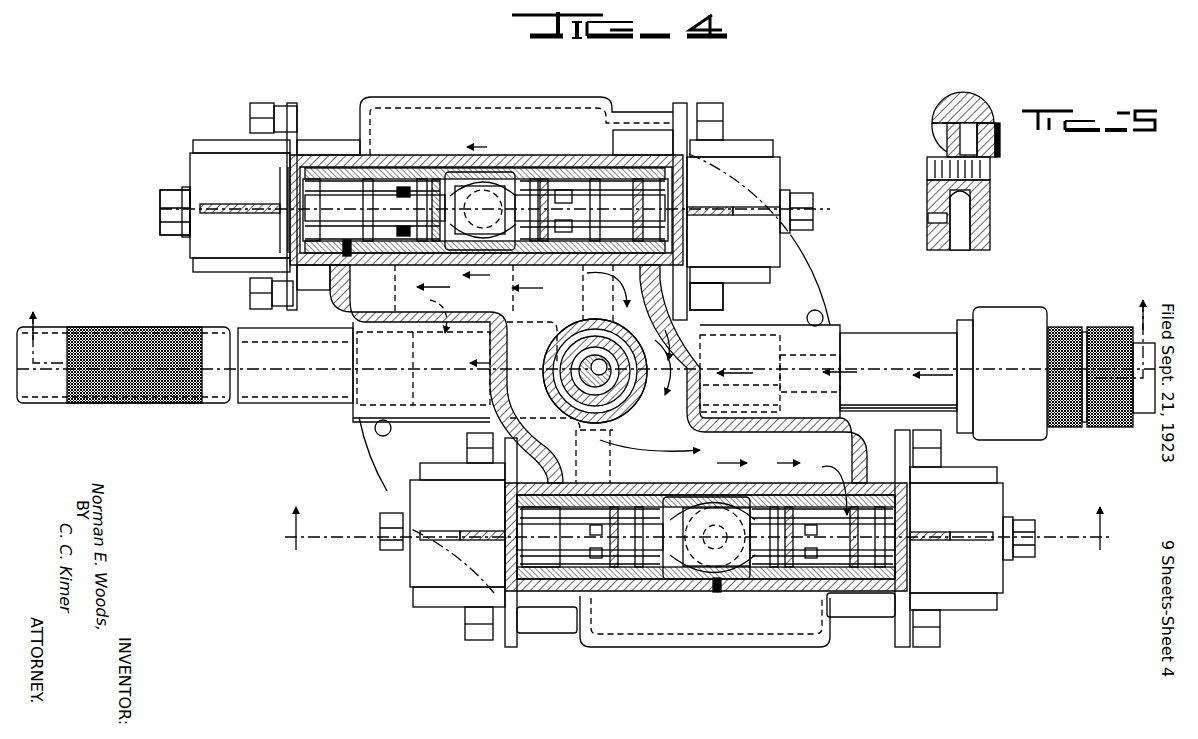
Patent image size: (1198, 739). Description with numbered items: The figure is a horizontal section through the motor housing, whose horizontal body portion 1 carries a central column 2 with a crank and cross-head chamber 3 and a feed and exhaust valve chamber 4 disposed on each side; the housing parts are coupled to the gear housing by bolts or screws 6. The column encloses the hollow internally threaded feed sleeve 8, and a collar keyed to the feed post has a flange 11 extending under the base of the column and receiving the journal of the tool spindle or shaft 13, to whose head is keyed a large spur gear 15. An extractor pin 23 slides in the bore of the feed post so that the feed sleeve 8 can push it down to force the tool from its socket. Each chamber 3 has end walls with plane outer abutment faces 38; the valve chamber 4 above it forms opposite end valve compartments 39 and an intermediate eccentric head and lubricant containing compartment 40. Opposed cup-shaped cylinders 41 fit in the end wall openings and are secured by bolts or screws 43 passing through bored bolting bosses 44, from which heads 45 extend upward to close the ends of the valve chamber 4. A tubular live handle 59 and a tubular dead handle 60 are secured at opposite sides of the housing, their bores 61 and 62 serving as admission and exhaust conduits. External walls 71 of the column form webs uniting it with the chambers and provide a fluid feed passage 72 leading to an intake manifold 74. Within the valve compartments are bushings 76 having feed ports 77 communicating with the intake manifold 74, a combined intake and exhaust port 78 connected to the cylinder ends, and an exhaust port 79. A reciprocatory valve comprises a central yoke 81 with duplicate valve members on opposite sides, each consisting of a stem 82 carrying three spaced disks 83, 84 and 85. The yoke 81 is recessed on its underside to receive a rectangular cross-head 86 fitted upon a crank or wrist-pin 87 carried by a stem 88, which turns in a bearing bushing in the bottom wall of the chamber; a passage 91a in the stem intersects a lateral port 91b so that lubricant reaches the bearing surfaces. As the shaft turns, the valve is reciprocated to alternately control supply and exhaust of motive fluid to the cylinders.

In FIG. 4, the horizontal body portion 1 is at (447, 427).
In FIG. 4, the central column 2 is at (733, 308).
In FIG. 4, the crank and cross-head chamber 3 is at (478, 100).
In FIG. 4, the feed and exhaust valve chamber 4 is at (585, 155).
In FIG. 4, the bolts or screws 6 is at (835, 312).
In FIG. 4, the feed sleeve 8 is at (700, 326).
In FIG. 4, the flange 11 is at (197, 266).
In FIG. 4, the tool spindle or shaft 13 is at (163, 206).
In FIG. 4, the large spur gear 15 is at (287, 225).
In FIG. 4, the extractor pin 23 is at (603, 424).
In FIG. 4, the outer abutment faces 38 is at (270, 172).
In FIG. 4, the end valve compartments 39 is at (298, 150).
In FIG. 4, the eccentric head and lubricant containing compartment 40 is at (448, 178).
In FIG. 4, the cup-shaped cylinders 41 is at (205, 140).
In FIG. 4, the bolts or screws 43 is at (262, 103).
In FIG. 4, the bored bolting bosses 44 is at (787, 195).
In FIG. 4, the heads 45 is at (687, 192).
In FIG. 4, the tubular live handle 59 is at (905, 335).
In FIG. 4, the tubular dead handle 60 is at (248, 387).
In FIG. 4, the bore 61 is at (775, 420).
In FIG. 4, the bore 62 is at (300, 408).
In FIG. 4, the external walls 71 is at (705, 365).
In FIG. 4, the fluid feed passage 72 is at (713, 398).
In FIG. 4, the intake manifold 74 is at (585, 290).
In FIG. 4, the bushings 76 is at (372, 170).
In FIG. 4, the feed ports 77 is at (337, 267).
In FIG. 4, the combined intake and exhaust port 78 is at (647, 155).
In FIG. 4, the exhaust port 79 is at (420, 179).
In FIG. 4, the central yoke 81 is at (503, 180).
In FIG. 15, the central yoke 81 is at (950, 95).
In FIG. 4, the stem 82 is at (530, 195).
In FIG. 15, the stem 82 is at (947, 128).
In FIG. 4, the disk 83 is at (322, 179).
In FIG. 4, the disk 84 is at (348, 255).
In FIG. 4, the disk 85 is at (270, 204).
In FIG. 4, the rectangular cross-head 86 is at (462, 172).
In FIG. 15, the rectangular cross-head 86 is at (1000, 135).
In FIG. 4, the crank or wrist-pin 87 is at (505, 170).
In FIG. 15, the crank or wrist-pin 87 is at (970, 135).
In FIG. 15, the stem 88 is at (990, 230).
In FIG. 15, the passage 91a is at (987, 203).
In FIG. 15, the lateral port 91b is at (937, 217).